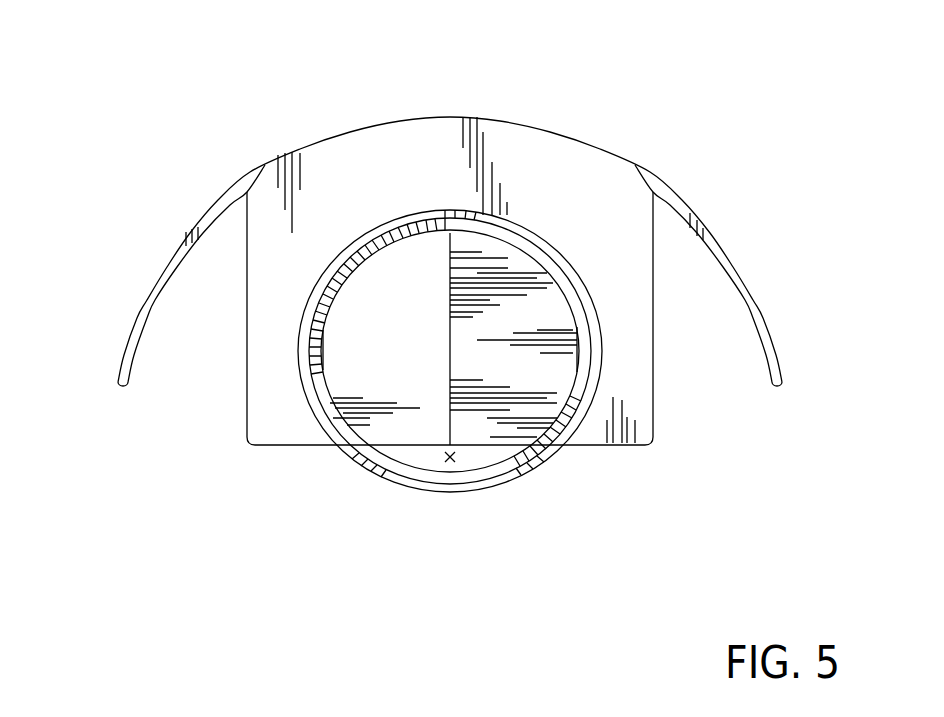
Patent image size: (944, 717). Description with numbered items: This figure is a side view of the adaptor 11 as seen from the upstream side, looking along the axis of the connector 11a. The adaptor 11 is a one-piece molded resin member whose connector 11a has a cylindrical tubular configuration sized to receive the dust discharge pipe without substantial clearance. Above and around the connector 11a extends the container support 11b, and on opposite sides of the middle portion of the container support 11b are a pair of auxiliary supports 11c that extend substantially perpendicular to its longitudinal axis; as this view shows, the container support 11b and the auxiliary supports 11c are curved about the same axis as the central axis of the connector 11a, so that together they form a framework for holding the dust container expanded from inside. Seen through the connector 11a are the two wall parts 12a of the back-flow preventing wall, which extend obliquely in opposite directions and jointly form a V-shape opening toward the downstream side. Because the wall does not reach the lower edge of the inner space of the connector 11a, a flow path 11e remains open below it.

The adaptor 11 is at (233, 140).
The connector 11a is at (575, 291).
The container support 11b is at (430, 128).
The auxiliary supports 11c is at (140, 315).
The flow path 11e is at (455, 462).
The wall parts 12a is at (365, 313).